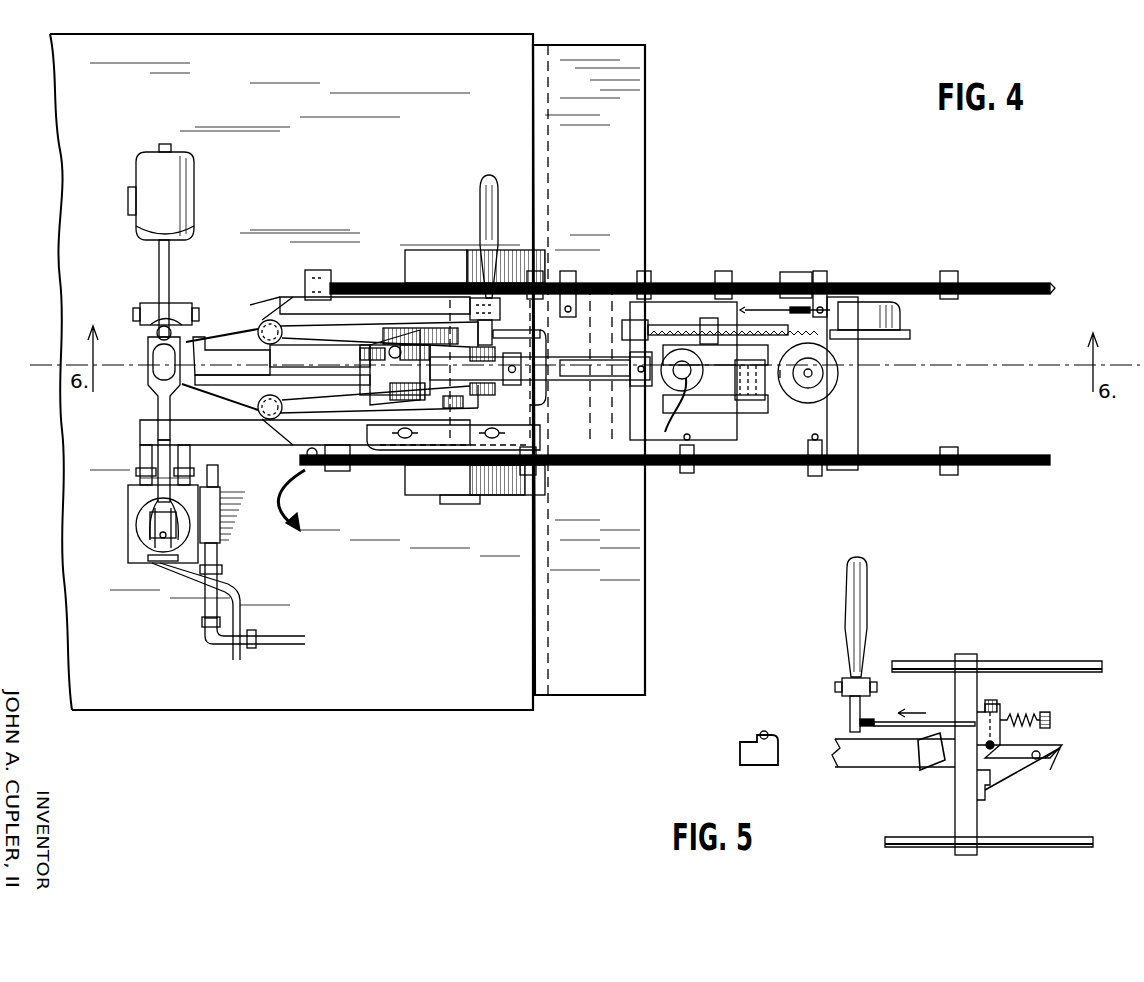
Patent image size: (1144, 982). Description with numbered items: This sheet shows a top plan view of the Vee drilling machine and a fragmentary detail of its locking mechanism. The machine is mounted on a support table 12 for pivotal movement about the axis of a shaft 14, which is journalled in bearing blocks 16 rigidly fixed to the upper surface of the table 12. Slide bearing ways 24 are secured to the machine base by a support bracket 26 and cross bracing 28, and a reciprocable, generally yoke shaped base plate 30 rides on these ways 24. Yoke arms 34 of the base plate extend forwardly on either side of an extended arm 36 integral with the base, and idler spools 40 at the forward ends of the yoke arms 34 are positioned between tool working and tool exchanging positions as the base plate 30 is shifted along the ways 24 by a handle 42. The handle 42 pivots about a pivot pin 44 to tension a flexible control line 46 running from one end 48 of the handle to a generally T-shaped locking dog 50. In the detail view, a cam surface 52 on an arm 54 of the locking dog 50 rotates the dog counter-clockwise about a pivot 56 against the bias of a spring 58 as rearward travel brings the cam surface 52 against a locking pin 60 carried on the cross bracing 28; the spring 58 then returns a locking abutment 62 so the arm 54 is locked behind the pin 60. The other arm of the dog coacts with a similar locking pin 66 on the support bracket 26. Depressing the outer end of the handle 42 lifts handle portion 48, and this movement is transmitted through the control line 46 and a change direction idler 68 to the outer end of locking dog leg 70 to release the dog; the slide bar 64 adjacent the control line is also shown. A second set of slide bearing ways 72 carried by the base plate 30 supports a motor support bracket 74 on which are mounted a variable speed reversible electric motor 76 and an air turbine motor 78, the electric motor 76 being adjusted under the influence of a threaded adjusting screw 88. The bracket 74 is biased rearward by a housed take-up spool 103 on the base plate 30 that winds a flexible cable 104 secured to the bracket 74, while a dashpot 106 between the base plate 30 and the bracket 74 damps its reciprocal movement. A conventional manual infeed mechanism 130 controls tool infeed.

In FIG. 4, the support table 12 is at (468, 644).
In FIG. 4, the shaft 14 is at (460, 503).
In FIG. 4, the bearing blocks 16 is at (432, 265).
In FIG. 4, the slide bearing ways 24 is at (352, 283).
In FIG. 5, the slide bearing ways 24 is at (1018, 668).
In FIG. 5, the support bracket 26 is at (740, 745).
In FIG. 4, the cross bracing 28 is at (594, 468).
In FIG. 5, the cross bracing 28 is at (966, 655).
In FIG. 4, the base plate 30 is at (616, 455).
In FIG. 4, the yoke arms 34 is at (288, 298).
In FIG. 4, the extended arm 36 is at (322, 372).
In FIG. 4, the idler spools 40 is at (262, 326).
In FIG. 4, the handle 42 is at (486, 205).
In FIG. 5, the handle 42 is at (858, 615).
In FIG. 4, the pivot pin 44 is at (470, 300).
In FIG. 5, the pivot pin 44 is at (840, 686).
In FIG. 4, the flexible control line 46 is at (514, 348).
In FIG. 5, the flexible control line 46 is at (946, 722).
In FIG. 5, the handle end 48 is at (850, 720).
In FIG. 5, the locking dog 50 is at (1000, 705).
In FIG. 5, the cam surface 52 is at (1060, 748).
In FIG. 5, the arm 54 is at (1030, 750).
In FIG. 5, the pivot 56 is at (991, 750).
In FIG. 5, the spring 58 is at (1030, 718).
In FIG. 5, the locking pin 60 is at (1036, 760).
In FIG. 5, the locking abutment 62 is at (1052, 762).
In FIG. 5, the slide bar 64 is at (948, 760).
In FIG. 4, the locking pin 66 is at (395, 346).
In FIG. 5, the locking pin 66 is at (762, 732).
In FIG. 5, the change direction idler 68 is at (868, 716).
In FIG. 5, the locking dog leg 70 is at (991, 708).
In FIG. 4, the slide bearing ways 72 is at (918, 283).
In FIG. 4, the motor support bracket 74 is at (715, 428).
In FIG. 4, the variable speed reversible electric motor 76 is at (835, 385).
In FIG. 4, the air turbine motor 78 is at (670, 385).
In FIG. 4, the threaded adjusting screw 88 is at (655, 325).
In FIG. 4, the take-up spool 103 is at (898, 320).
In FIG. 4, the flexible cable 104 is at (752, 310).
In FIG. 4, the dashpot 106 is at (558, 360).
In FIG. 4, the manual infeed mechanism 130 is at (148, 404).